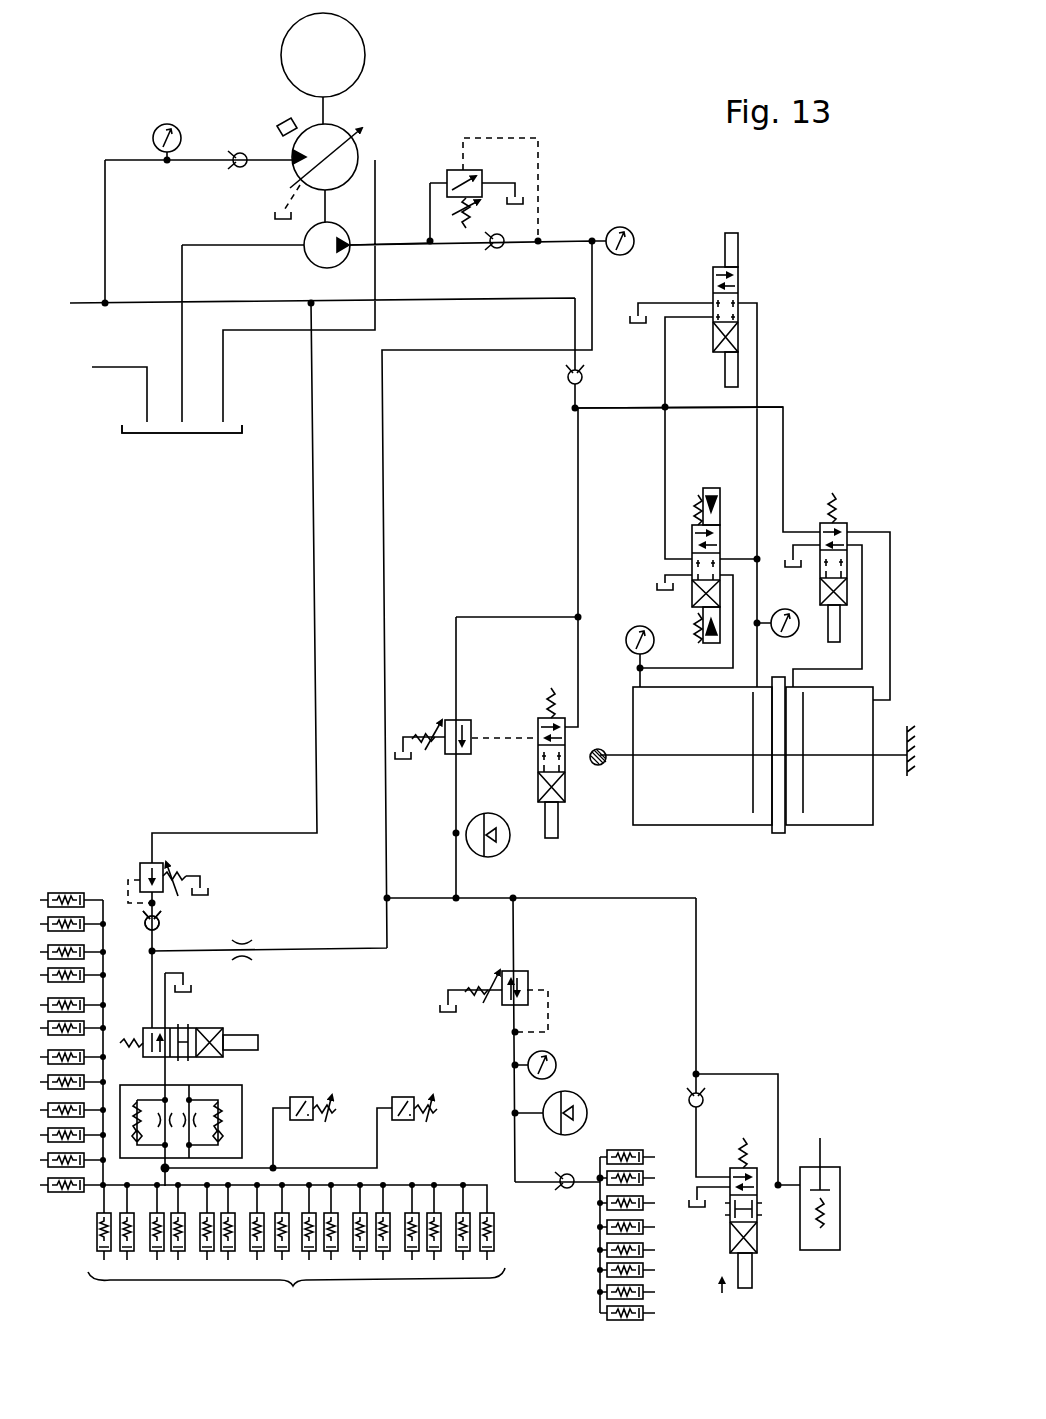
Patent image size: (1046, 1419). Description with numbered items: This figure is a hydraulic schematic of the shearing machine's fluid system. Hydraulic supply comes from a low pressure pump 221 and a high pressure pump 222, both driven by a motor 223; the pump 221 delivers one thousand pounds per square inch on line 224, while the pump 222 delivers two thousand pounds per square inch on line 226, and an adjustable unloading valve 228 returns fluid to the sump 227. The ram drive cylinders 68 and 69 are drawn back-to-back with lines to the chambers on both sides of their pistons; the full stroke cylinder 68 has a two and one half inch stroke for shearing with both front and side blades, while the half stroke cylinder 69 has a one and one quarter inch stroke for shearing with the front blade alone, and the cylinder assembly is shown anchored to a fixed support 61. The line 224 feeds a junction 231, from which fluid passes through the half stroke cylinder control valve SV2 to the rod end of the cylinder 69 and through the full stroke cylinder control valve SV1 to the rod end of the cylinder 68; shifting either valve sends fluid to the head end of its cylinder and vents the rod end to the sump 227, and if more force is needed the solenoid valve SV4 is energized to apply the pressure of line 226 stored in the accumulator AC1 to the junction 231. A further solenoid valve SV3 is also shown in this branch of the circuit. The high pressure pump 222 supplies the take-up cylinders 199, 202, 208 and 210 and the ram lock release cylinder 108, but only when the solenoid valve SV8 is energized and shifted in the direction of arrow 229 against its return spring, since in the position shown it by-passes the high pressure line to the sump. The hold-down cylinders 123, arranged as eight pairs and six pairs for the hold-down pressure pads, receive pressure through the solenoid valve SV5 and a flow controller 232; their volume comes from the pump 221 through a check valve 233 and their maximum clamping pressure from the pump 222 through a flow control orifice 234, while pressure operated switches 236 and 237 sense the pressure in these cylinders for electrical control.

The motor 223 is at (366, 58).
The pump 221 is at (344, 128).
The pump 222 is at (318, 262).
The line 224 is at (197, 160).
The line 226 is at (388, 246).
The adjustable unloading valve 228 is at (458, 170).
The sump 227 is at (232, 422).
The junction 231 is at (662, 410).
The solenoid valve SV3 is at (740, 283).
The full stroke cylinder control valve SV1 is at (692, 590).
The half stroke cylinder control valve SV2 is at (850, 522).
The solenoid valve SV4 is at (567, 785).
The solenoid valve SV5 is at (198, 1028).
The solenoid valve SV8 is at (757, 1270).
The accumulator AC1 is at (505, 852).
The ram drive cylinder 68 is at (683, 825).
The ram drive cylinder 69 is at (825, 815).
The fixed support 61 is at (906, 762).
The hold-down cylinders 123 is at (88, 842).
The check valve 233 is at (162, 930).
The flow control orifice 234 is at (250, 941).
The flow controller 232 is at (242, 1085).
The pressure operated switch 236 is at (312, 1097).
The pressure operated switch 237 is at (408, 1097).
The take-up cylinder 199 is at (655, 1157).
The take-up cylinder 202 is at (655, 1203).
The take-up cylinder 208 is at (655, 1250).
The take-up cylinder 210 is at (655, 1292).
The ram lock release cylinder 108 is at (835, 1212).
The arrow 229 is at (722, 1293).